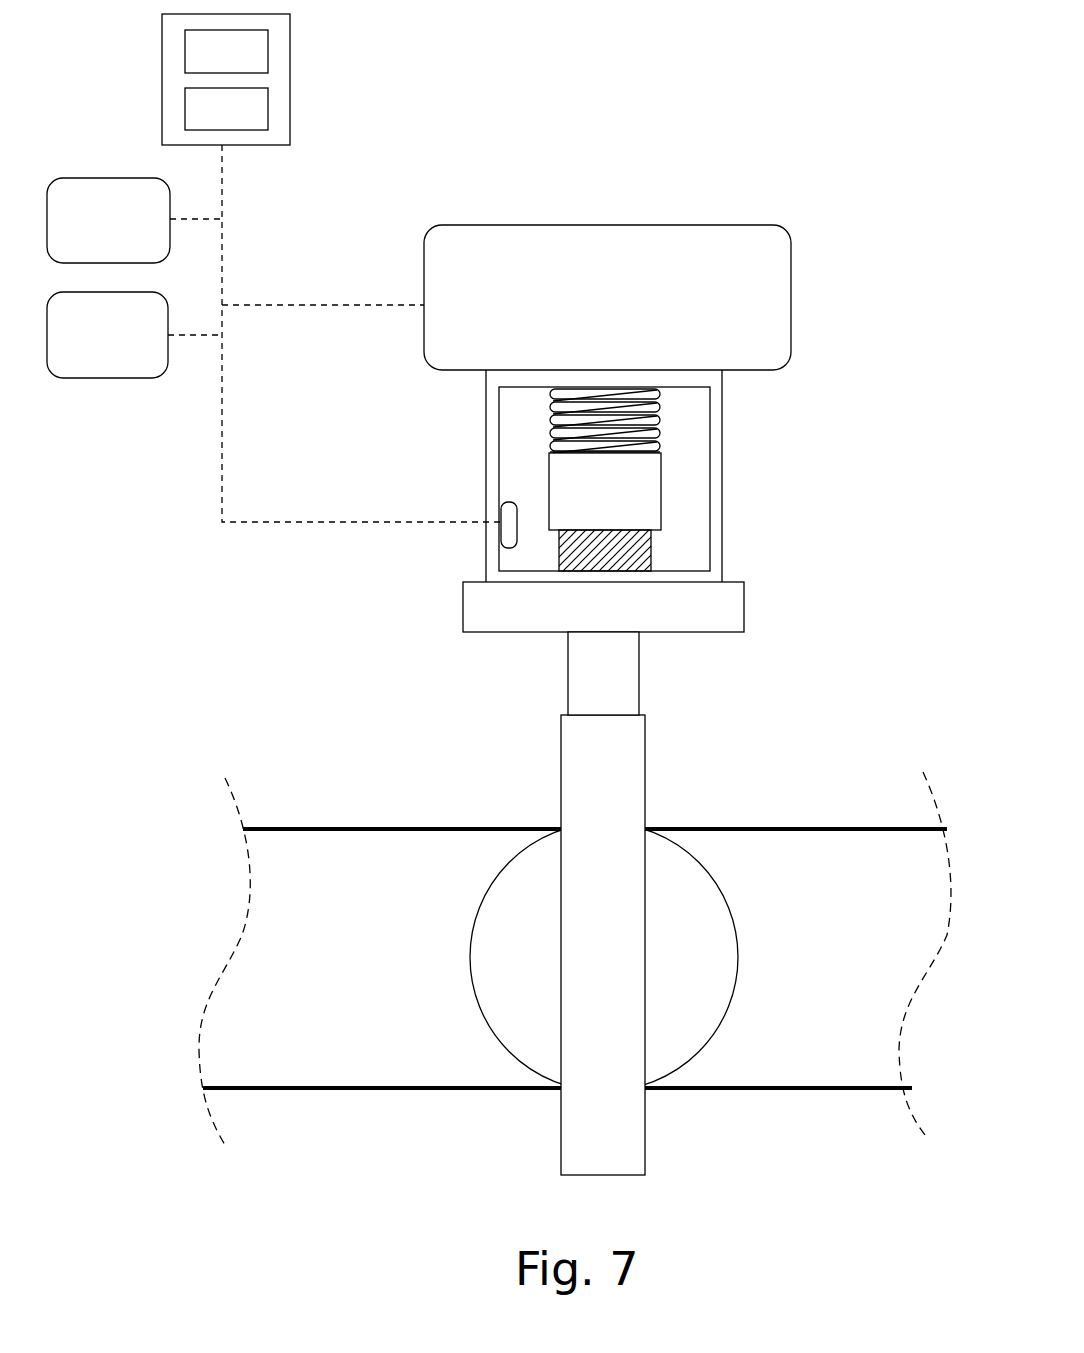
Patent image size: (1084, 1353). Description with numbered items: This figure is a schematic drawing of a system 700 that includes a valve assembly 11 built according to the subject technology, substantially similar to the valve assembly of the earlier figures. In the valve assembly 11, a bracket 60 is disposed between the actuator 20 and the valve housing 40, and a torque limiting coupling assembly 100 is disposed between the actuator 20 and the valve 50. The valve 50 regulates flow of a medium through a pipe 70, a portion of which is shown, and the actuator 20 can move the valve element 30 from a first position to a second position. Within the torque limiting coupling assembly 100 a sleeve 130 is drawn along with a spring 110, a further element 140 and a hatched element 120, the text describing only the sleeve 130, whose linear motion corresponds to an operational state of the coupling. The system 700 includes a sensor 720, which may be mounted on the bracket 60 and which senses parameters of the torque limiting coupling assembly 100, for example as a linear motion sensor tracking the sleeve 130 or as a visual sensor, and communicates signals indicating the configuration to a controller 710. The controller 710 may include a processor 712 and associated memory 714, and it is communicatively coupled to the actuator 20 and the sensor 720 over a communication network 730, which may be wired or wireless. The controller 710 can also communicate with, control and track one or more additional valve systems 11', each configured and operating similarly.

The system 700 is at (756, 40).
The controller 710 is at (290, 47).
The processor 712 is at (208, 64).
The memory 714 is at (208, 121).
The additional valve systems 11' is at (108, 278).
The valve assembly 11 is at (665, 262).
The actuator 20 is at (792, 311).
The torque limiting coupling assembly 100 is at (840, 385).
The bracket 60 is at (487, 430).
The spring 110 is at (660, 410).
The spring seat 140 is at (652, 436).
The sleeve 130 is at (661, 483).
The magnet 120 is at (651, 548).
The valve 50 is at (830, 626).
The valve housing 40 is at (645, 788).
The pipe 70 is at (418, 828).
The valve element 30 is at (718, 1023).
The sensor 720 is at (501, 541).
The communication network 730 is at (222, 543).